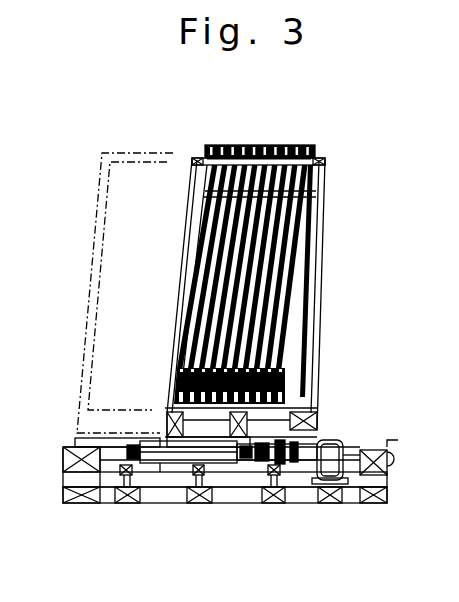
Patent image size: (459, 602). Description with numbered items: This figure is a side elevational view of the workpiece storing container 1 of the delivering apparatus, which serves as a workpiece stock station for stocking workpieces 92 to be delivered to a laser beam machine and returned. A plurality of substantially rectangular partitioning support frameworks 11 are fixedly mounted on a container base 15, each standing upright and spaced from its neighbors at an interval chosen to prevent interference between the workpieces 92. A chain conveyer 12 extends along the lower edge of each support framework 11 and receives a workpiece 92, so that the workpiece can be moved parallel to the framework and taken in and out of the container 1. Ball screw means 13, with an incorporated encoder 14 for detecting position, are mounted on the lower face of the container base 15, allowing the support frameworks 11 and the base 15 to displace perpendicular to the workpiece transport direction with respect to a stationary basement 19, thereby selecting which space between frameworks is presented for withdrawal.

The workpiece storing container 1 is at (327, 171).
The partitioning support framework 11 is at (188, 205).
The workpiece 92 is at (300, 213).
The chain conveyer 12 is at (170, 380).
The container base 15 is at (163, 427).
The stationary basement 19 is at (66, 462).
The ball screw means 13 is at (262, 505).
The encoder 14 is at (318, 505).